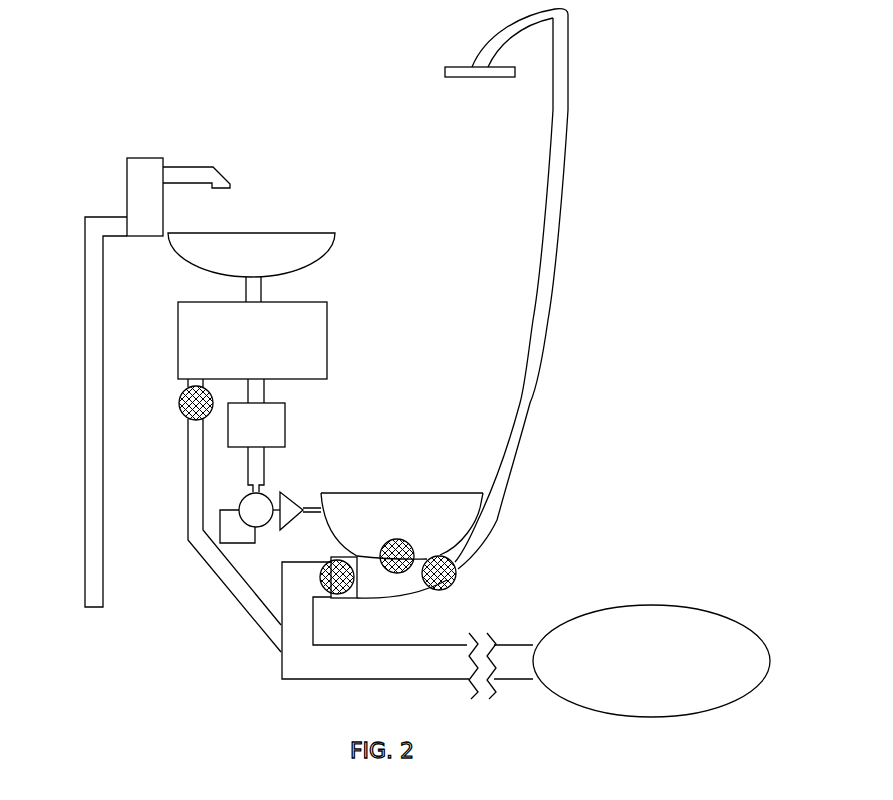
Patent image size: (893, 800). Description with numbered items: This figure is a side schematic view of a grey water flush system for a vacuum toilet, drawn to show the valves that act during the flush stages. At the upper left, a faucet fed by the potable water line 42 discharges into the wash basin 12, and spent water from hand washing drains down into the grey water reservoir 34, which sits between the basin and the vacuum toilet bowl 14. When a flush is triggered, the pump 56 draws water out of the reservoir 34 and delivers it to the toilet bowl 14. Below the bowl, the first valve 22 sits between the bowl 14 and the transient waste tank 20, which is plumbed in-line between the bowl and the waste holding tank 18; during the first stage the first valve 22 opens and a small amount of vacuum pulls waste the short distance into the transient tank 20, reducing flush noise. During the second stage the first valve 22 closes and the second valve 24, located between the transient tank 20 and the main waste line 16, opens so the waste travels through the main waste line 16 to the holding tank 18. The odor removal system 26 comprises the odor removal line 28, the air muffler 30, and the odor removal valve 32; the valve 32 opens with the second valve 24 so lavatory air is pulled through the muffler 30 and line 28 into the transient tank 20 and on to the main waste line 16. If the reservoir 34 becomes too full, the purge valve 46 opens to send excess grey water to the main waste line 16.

The wash basin 12 is at (251, 267).
The vacuum toilet bowl 14 is at (402, 526).
The main waste line 16 is at (424, 668).
The waste holding tank 18 is at (651, 661).
The transient waste tank 20 is at (398, 582).
The first valve 22 is at (393, 539).
The second valve 24 is at (322, 583).
The odor removal system 26 is at (612, 315).
The odor removal line 28 is at (530, 403).
The air muffler 30 is at (455, 60).
The odor removal valve 32 is at (457, 570).
The grey water reservoir 34 is at (252, 340).
The potable water line 42 is at (93, 313).
The purge valve 46 is at (187, 415).
The pump 56 is at (246, 518).